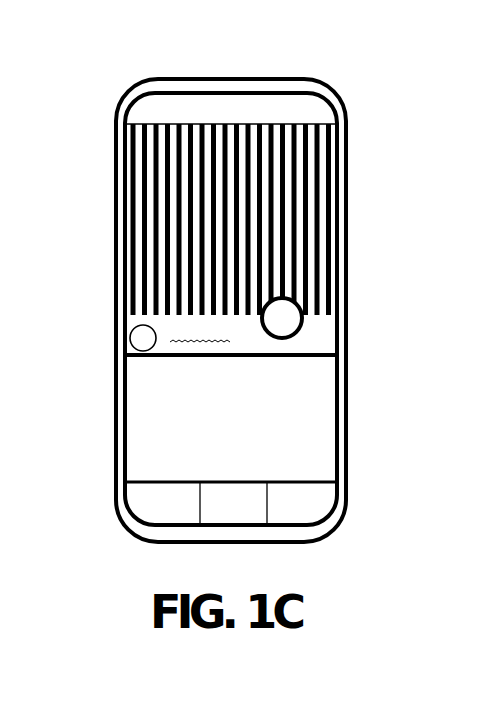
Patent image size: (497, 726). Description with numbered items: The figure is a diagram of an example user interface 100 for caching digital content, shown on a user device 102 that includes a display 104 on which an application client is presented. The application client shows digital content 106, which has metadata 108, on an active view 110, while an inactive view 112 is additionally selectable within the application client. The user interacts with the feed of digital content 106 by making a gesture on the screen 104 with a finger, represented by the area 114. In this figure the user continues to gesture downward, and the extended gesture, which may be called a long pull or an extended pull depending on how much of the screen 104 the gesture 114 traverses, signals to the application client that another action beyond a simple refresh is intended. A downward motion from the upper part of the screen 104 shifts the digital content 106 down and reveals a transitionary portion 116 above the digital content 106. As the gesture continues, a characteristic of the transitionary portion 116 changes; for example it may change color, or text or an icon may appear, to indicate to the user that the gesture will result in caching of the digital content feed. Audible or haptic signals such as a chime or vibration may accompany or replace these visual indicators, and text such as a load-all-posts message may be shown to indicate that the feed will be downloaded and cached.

The user interface 100 is at (247, 296).
The user device 102 is at (347, 112).
The display 104 is at (341, 197).
The digital content 106 is at (250, 465).
The metadata 108 is at (173, 343).
The active view 110 is at (225, 503).
The inactive view 112 is at (288, 503).
The area 114 is at (305, 323).
The transitionary portion 116 is at (128, 172).